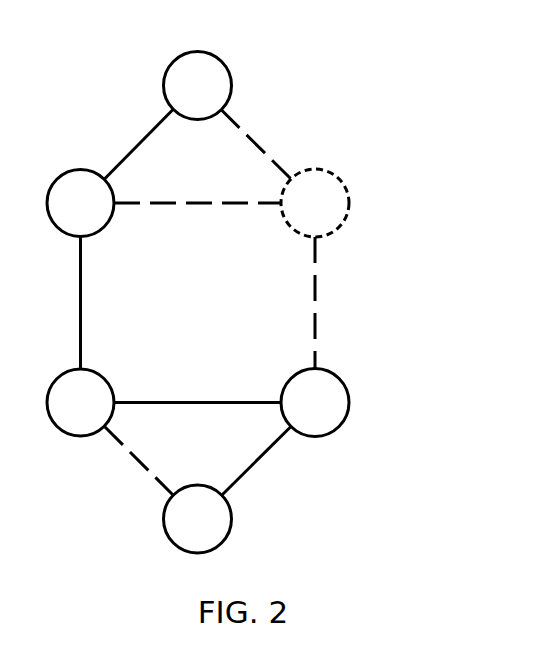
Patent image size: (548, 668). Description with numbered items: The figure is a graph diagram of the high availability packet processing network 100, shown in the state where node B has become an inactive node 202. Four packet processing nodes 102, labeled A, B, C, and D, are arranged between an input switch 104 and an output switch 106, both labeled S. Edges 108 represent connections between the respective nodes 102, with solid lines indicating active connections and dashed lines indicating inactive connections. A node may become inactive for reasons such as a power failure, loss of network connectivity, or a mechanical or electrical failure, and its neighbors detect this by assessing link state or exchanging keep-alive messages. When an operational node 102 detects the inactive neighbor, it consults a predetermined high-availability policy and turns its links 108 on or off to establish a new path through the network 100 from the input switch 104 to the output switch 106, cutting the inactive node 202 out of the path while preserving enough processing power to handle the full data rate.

The packet processing network 100 is at (88, 88).
The packet processing node 102 is at (346, 388).
The input switch 104 is at (230, 68).
The output switch 106 is at (232, 533).
The edge 108 is at (317, 310).
The inactive node 202 is at (346, 185).